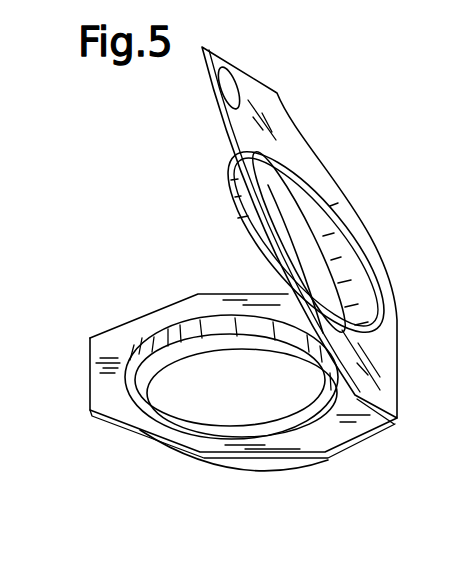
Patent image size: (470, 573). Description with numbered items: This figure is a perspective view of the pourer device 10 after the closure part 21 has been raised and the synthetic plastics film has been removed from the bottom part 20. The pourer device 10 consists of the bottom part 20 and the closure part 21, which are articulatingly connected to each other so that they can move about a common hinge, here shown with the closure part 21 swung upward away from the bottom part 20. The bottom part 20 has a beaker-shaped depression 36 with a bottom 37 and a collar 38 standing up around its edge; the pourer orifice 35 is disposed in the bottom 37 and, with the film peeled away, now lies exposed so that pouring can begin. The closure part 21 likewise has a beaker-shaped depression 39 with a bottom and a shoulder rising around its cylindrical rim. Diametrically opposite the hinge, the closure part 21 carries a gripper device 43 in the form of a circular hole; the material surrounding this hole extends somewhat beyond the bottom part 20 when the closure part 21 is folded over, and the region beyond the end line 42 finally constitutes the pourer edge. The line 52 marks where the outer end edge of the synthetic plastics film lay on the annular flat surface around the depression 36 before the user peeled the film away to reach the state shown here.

The pourer device 10 is at (378, 103).
The bottom part 20 is at (139, 464).
The closure part 21 is at (382, 252).
The pourer orifice 35 is at (247, 407).
The beaker-shaped depression 36 is at (162, 357).
The bottom 37 is at (215, 351).
The collar 38 is at (148, 353).
The beaker-shaped depression 39 is at (318, 230).
The end line 42 is at (88, 383).
The gripper device 43 is at (228, 82).
The line 52 is at (335, 428).